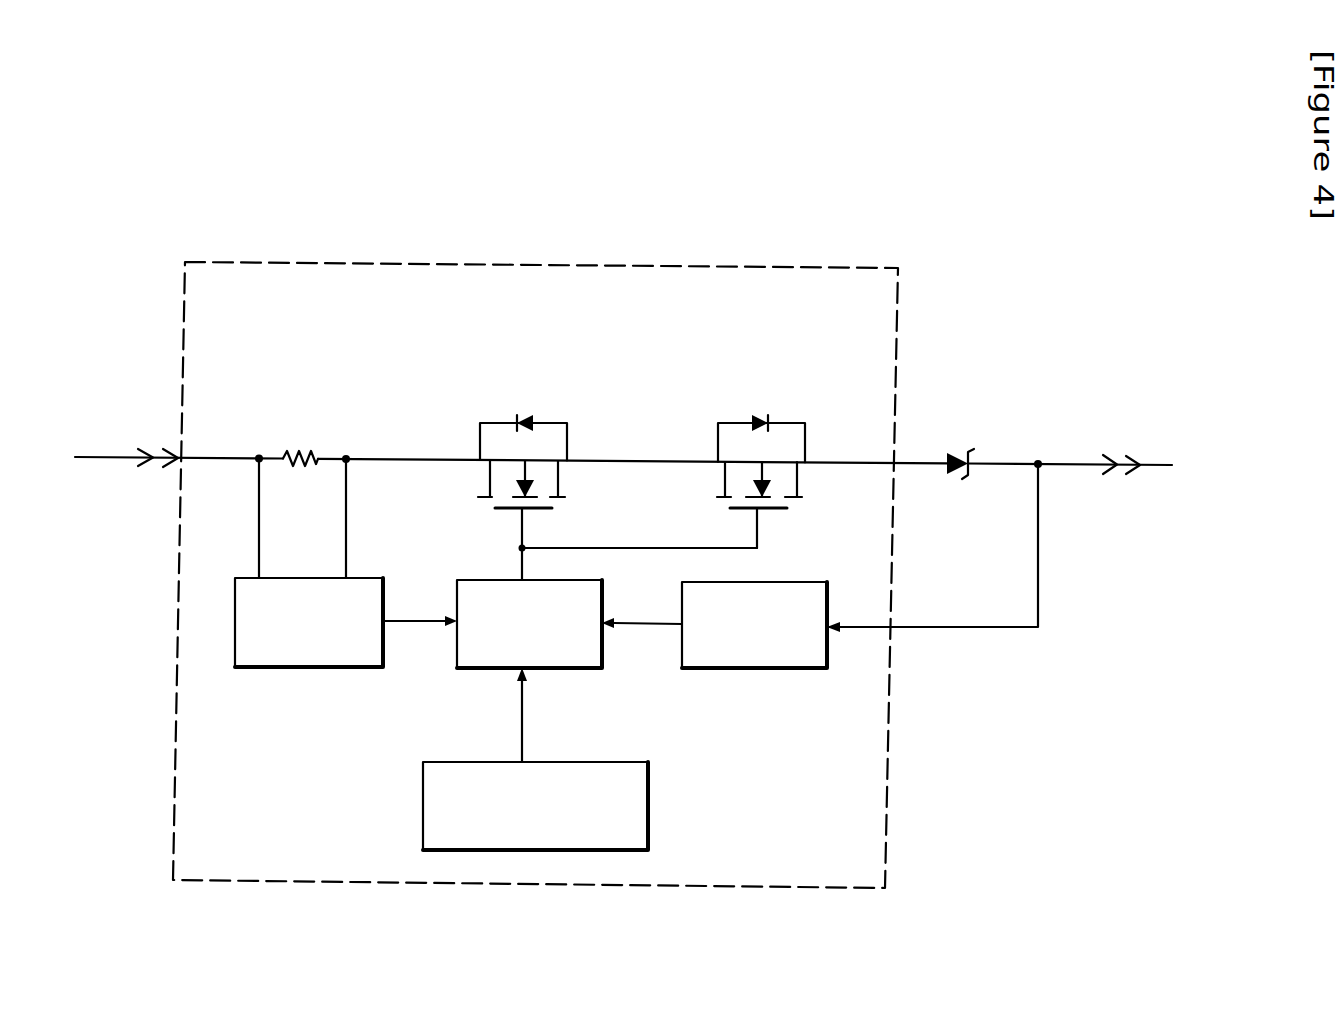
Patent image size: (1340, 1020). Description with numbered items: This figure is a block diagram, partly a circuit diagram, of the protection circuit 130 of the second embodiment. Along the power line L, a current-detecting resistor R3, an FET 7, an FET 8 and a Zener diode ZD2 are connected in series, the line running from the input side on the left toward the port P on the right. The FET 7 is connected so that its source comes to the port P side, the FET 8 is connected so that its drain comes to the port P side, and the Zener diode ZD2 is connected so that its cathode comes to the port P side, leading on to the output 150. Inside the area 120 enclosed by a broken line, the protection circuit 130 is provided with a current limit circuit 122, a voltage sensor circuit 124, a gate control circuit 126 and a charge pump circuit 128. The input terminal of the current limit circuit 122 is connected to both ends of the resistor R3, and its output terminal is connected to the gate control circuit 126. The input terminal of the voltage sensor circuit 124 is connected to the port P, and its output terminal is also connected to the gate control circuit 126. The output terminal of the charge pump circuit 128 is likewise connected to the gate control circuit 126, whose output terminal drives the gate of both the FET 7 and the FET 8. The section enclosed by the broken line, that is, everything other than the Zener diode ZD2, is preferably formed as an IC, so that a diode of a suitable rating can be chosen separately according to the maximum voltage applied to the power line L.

The area enclosed by a broken line 120 is at (690, 266).
The current limit circuit 122 is at (355, 578).
The voltage sensor circuit 124 is at (753, 582).
The gate control circuit 126 is at (570, 668).
The charge pump circuit 128 is at (558, 762).
The protection circuit 130 is at (987, 288).
The output terminal 150 is at (1157, 465).
The resistor R3 is at (296, 448).
The FET FET7 is at (563, 472).
The FET FET8 is at (717, 480).
The Zener diode ZD2 is at (958, 450).
The power line L is at (103, 457).
The port P is at (1118, 472).